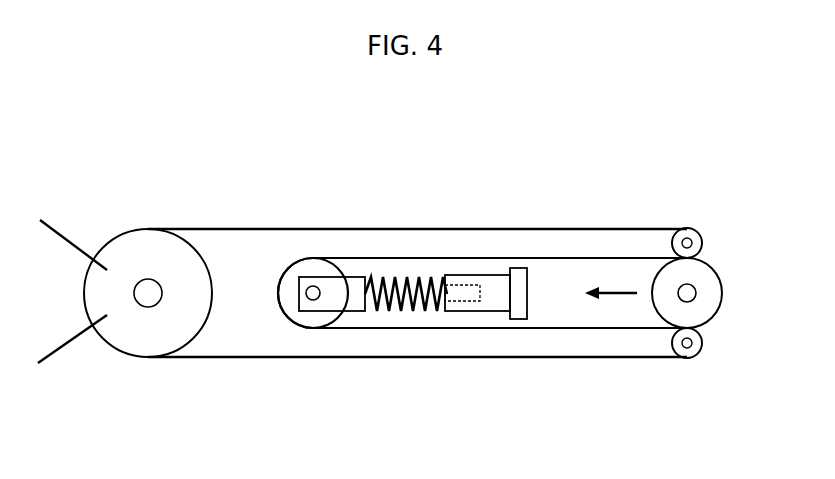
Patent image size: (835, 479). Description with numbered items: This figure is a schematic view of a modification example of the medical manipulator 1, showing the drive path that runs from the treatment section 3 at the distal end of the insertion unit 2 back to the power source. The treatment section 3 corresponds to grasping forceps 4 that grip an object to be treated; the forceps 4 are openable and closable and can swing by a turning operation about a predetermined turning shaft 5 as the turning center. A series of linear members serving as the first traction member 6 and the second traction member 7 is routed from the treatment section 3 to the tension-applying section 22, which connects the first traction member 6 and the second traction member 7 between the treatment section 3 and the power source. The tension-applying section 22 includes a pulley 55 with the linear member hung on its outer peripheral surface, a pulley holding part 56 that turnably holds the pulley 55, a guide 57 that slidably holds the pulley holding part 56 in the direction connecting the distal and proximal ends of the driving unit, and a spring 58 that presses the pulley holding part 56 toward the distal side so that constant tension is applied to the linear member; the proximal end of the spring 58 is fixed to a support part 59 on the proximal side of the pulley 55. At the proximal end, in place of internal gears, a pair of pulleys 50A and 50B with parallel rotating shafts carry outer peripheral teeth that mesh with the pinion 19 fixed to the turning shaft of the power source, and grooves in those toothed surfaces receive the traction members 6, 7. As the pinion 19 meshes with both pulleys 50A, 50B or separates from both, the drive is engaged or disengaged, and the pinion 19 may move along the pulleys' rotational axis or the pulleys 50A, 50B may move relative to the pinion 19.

The transport device 1 is at (627, 155).
The insertion unit 2 is at (487, 201).
The treatment section 3 is at (118, 387).
The grasping forceps 4 is at (58, 354).
The turning shaft 5 is at (168, 343).
The first traction member 6 is at (582, 228).
The second traction member 7 is at (582, 358).
The pinion 19 is at (719, 275).
The tension-applying section 22 is at (417, 330).
The pulley 50A is at (688, 229).
The pulley 50B is at (694, 351).
The pulley 55 is at (307, 258).
The pulley holding part 56 is at (332, 290).
The guide 57 is at (423, 259).
The spring 58 is at (378, 280).
The support part 59 is at (500, 269).